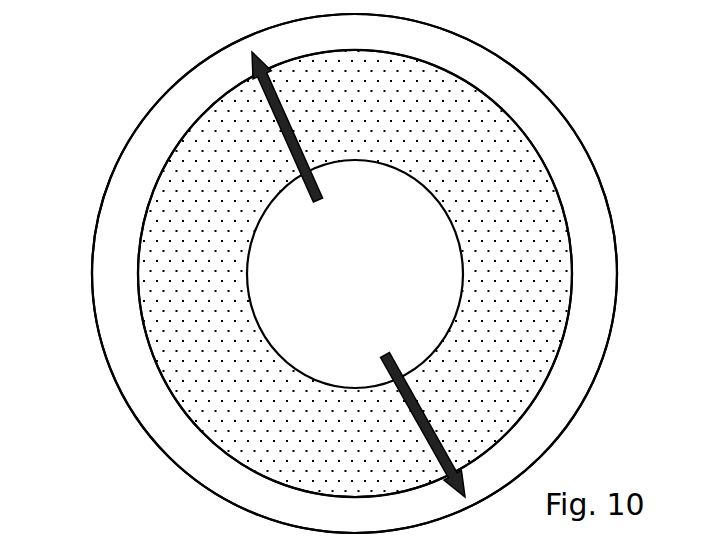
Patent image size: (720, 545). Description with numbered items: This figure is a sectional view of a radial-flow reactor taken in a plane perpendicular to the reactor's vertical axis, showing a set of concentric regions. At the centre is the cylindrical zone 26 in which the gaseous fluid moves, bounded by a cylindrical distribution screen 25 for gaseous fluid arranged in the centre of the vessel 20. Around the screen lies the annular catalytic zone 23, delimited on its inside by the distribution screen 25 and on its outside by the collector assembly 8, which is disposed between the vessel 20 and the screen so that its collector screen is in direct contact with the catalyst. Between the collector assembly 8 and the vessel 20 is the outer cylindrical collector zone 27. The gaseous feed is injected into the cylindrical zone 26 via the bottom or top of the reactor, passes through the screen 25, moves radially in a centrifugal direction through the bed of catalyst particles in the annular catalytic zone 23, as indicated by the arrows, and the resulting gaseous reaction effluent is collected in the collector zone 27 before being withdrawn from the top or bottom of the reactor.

The collector assembly 8 is at (143, 243).
The vessel 20 is at (512, 63).
The annular catalytic zone 23 is at (512, 232).
The cylindrical distribution screen 25 is at (460, 320).
The cylindrical zone 26 is at (377, 250).
The outer cylindrical collector zone 27 is at (388, 48).